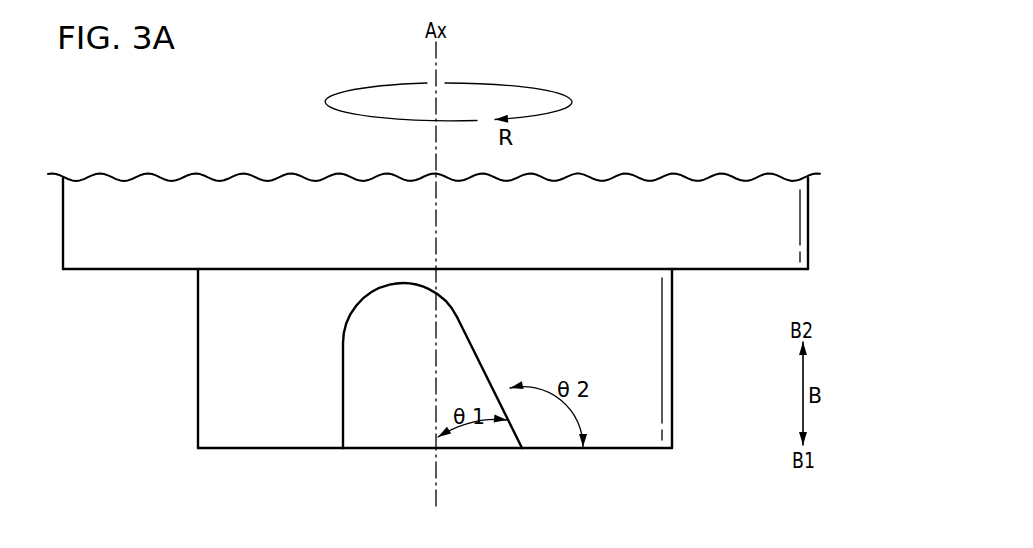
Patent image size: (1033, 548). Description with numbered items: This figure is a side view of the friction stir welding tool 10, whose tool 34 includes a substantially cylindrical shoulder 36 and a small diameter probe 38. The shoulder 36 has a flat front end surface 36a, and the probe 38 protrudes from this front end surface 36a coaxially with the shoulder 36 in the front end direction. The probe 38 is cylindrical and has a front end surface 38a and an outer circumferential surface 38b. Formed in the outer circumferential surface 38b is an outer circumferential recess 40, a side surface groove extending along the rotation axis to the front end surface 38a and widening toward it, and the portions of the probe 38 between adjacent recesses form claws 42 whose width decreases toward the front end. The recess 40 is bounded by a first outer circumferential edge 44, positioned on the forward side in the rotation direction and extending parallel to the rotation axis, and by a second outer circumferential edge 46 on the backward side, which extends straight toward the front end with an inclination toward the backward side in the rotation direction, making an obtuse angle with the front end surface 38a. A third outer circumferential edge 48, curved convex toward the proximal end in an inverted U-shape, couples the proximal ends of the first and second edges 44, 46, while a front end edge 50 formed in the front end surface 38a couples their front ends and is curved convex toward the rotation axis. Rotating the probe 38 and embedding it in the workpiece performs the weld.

The welding tool 10 is at (714, 114).
The tool 34 is at (753, 114).
The shoulder 36 is at (722, 260).
The front end surface of the shoulder 36a is at (88, 270).
The probe 38 is at (196, 337).
The front end surface of the probe 38a is at (223, 449).
The outer circumferential surface of the probe 38b is at (208, 388).
The outer circumferential recess 40 is at (383, 428).
The claw 42 is at (202, 437).
The first outer circumferential edge 44 is at (320, 395).
The second outer circumferential edge 46 is at (497, 381).
The third outer circumferential edge 48 is at (375, 287).
The front end edge 50 is at (417, 450).